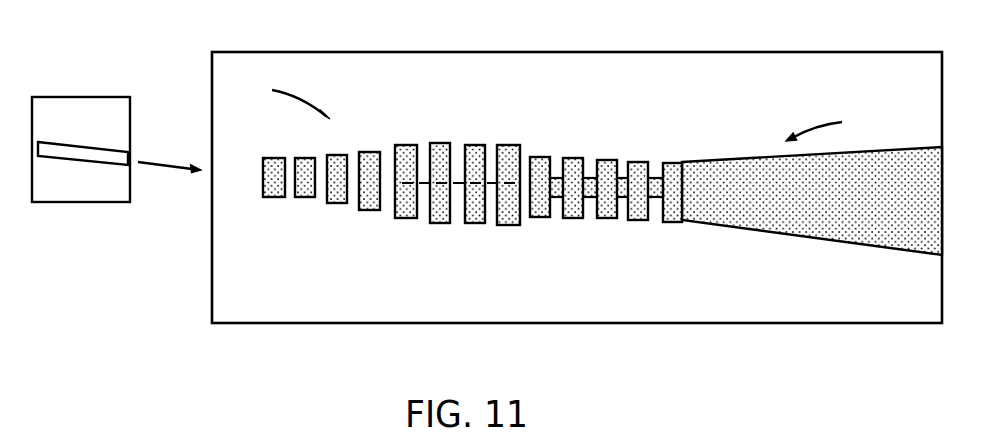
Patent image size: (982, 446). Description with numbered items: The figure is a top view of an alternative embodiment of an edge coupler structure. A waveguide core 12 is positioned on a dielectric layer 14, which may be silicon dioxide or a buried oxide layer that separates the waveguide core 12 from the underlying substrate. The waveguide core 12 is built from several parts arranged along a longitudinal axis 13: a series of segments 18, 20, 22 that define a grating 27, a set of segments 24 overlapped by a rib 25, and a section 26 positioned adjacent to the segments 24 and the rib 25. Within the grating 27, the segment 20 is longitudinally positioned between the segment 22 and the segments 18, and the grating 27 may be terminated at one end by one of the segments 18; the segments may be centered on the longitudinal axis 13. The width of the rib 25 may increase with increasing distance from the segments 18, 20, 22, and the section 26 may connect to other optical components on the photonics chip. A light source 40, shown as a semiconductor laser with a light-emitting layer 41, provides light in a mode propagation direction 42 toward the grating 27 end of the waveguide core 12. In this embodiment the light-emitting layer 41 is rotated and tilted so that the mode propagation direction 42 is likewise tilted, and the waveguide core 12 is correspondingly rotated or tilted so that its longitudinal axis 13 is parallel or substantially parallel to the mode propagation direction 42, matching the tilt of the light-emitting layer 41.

The waveguide core 12 is at (770, 164).
The longitudinal axis 13 is at (470, 185).
The dielectric layer 14 is at (253, 297).
The segments 18 is at (340, 184).
The segment 20 is at (473, 205).
The segment 22 is at (512, 200).
The segments 24 is at (575, 203).
The rib 25 is at (617, 190).
The section 26 is at (800, 212).
The grating 27 is at (285, 134).
The light source 40 is at (50, 118).
The light-emitting layer 41 is at (87, 152).
The mode propagation direction 42 is at (160, 162).